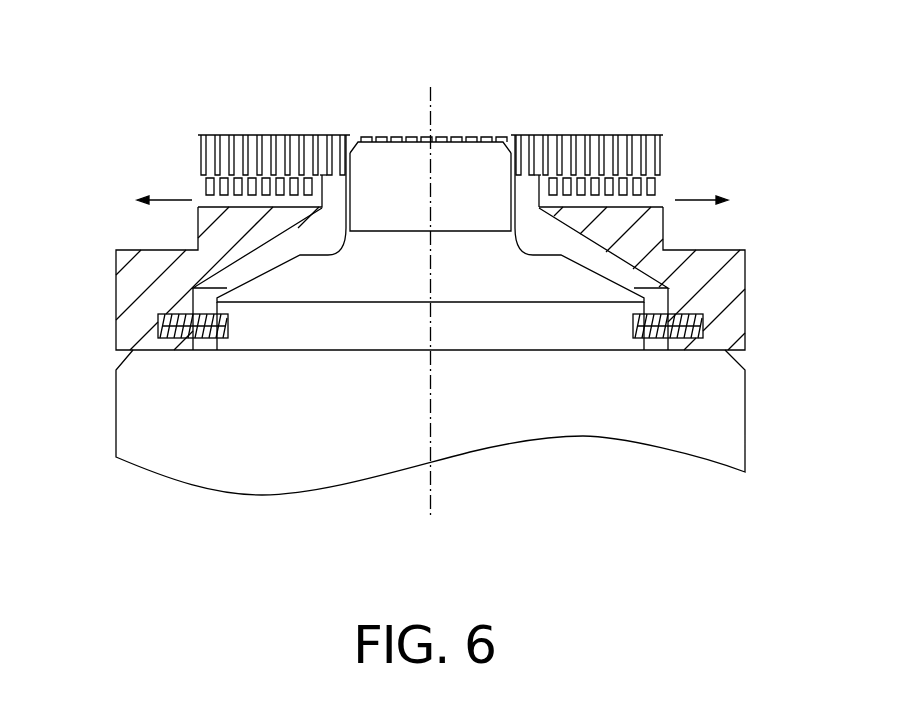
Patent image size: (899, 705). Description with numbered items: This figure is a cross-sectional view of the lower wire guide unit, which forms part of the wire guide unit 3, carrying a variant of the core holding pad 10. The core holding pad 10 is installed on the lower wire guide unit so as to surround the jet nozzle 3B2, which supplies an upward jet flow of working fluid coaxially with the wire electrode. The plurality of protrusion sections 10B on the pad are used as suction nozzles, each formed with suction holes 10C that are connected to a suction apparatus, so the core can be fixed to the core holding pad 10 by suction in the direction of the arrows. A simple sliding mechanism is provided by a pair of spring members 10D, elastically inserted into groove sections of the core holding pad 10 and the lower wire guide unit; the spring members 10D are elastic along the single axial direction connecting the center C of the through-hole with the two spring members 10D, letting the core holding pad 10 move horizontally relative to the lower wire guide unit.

The core holding pad 10 is at (143, 282).
The protrusion sections 10B is at (648, 163).
The suction holes 10C is at (233, 167).
The spring members 10D is at (158, 318).
The wire guide unit 3 is at (720, 417).
The jet nozzle 3B2 is at (472, 165).
The center C is at (430, 122).